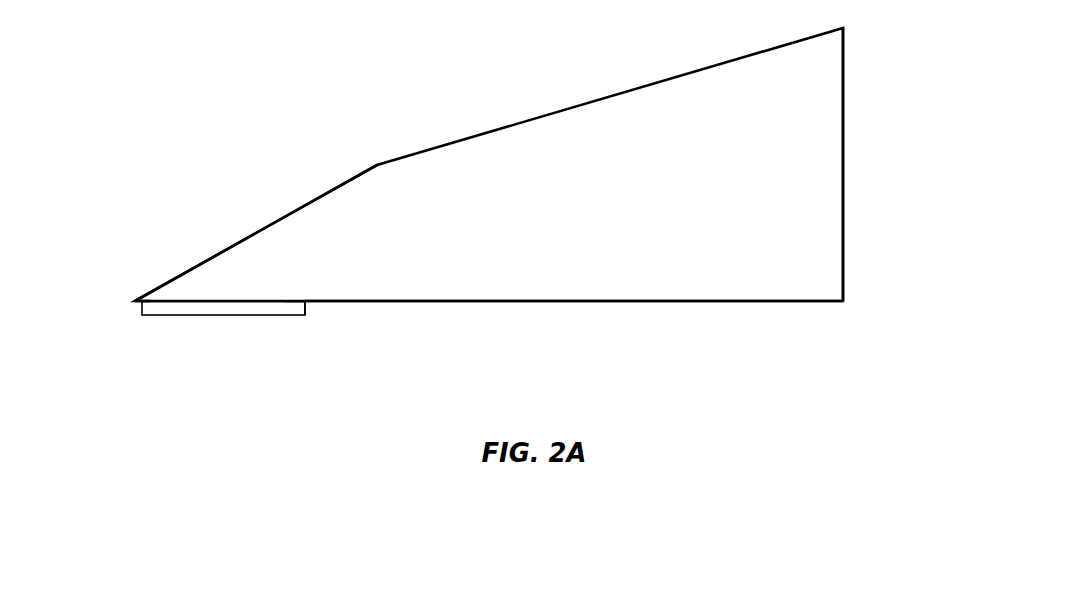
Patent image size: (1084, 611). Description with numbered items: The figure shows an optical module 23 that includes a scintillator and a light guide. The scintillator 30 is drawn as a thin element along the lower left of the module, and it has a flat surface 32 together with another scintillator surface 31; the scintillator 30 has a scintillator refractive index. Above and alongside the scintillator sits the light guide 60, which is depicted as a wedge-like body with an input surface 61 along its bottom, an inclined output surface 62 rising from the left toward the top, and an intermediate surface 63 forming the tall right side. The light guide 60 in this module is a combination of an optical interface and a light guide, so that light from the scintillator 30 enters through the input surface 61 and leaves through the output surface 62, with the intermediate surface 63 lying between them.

The light guide 60 is at (586, 240).
The input surface 61 is at (370, 302).
The output surface 62 is at (283, 214).
The intermediate surface 63 is at (845, 154).
The scintillator 30 is at (135, 303).
The scintillator surface 31 is at (213, 317).
The flat surface 32 is at (285, 302).
The optical module 23 is at (215, 416).